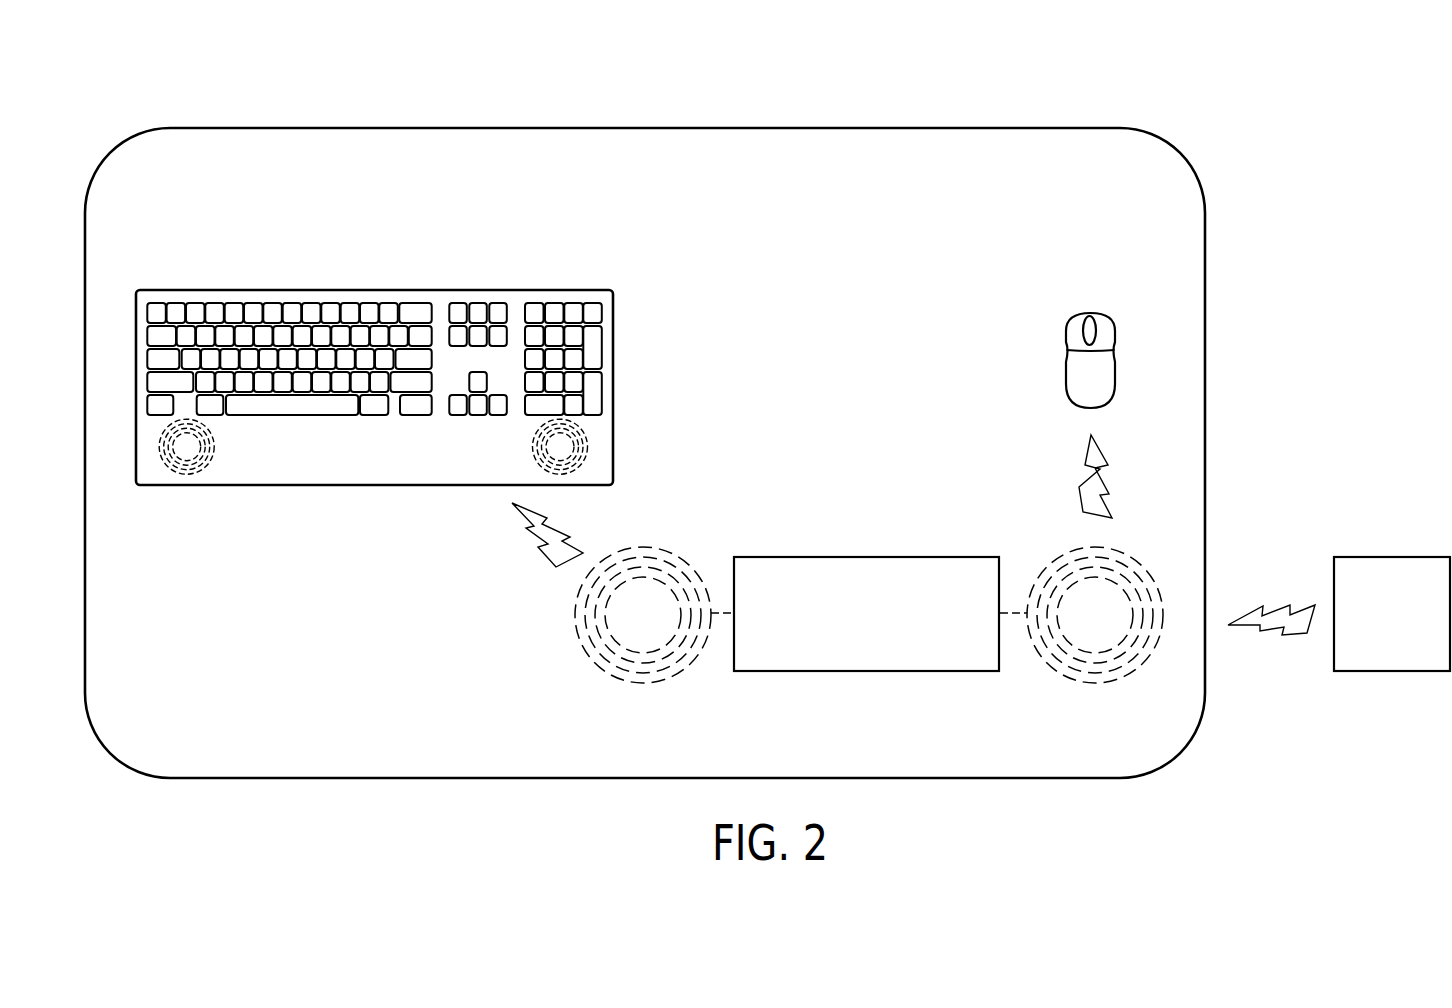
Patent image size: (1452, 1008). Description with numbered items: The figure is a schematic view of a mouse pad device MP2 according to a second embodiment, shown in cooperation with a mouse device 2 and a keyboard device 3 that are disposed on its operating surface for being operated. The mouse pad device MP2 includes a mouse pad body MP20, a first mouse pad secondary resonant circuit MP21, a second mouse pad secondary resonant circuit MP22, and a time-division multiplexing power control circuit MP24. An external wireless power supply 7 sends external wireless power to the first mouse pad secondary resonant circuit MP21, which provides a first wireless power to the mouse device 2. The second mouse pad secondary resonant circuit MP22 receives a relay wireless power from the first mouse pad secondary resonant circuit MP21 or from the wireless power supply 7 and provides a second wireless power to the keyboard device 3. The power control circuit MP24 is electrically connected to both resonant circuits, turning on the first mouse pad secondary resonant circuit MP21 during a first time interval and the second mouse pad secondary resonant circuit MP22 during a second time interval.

The mouse device 2 is at (1100, 316).
The keyboard device 3 is at (373, 478).
The wireless power supply 7 is at (1393, 557).
The mouse pad device MP2 is at (1207, 318).
The mouse pad body MP20 is at (1075, 167).
The first mouse pad secondary resonant circuit MP21 is at (1042, 660).
The second mouse pad secondary resonant circuit MP22 is at (592, 662).
The time-division multiplexing (TDM) power control circuit MP24 is at (870, 557).